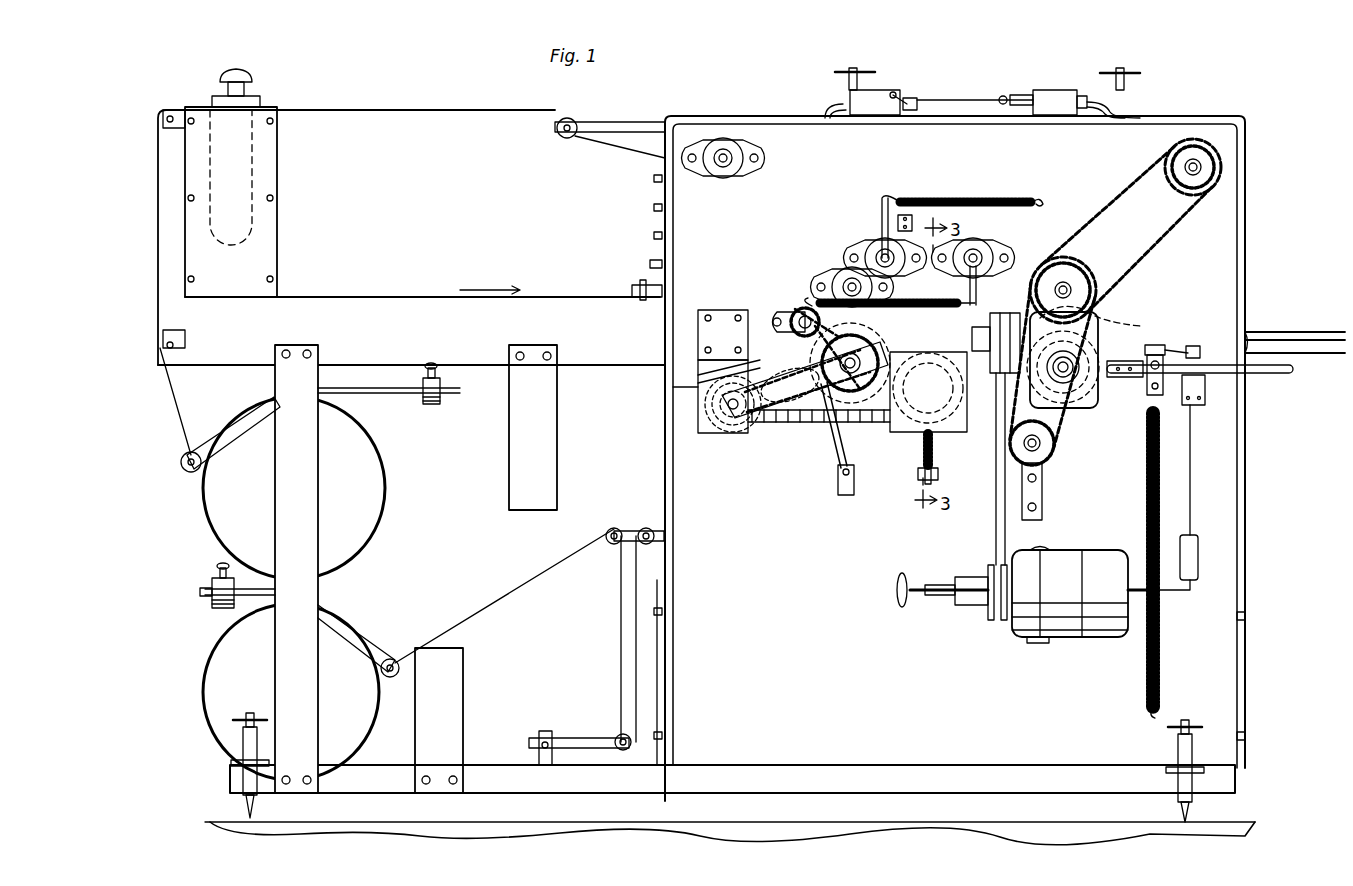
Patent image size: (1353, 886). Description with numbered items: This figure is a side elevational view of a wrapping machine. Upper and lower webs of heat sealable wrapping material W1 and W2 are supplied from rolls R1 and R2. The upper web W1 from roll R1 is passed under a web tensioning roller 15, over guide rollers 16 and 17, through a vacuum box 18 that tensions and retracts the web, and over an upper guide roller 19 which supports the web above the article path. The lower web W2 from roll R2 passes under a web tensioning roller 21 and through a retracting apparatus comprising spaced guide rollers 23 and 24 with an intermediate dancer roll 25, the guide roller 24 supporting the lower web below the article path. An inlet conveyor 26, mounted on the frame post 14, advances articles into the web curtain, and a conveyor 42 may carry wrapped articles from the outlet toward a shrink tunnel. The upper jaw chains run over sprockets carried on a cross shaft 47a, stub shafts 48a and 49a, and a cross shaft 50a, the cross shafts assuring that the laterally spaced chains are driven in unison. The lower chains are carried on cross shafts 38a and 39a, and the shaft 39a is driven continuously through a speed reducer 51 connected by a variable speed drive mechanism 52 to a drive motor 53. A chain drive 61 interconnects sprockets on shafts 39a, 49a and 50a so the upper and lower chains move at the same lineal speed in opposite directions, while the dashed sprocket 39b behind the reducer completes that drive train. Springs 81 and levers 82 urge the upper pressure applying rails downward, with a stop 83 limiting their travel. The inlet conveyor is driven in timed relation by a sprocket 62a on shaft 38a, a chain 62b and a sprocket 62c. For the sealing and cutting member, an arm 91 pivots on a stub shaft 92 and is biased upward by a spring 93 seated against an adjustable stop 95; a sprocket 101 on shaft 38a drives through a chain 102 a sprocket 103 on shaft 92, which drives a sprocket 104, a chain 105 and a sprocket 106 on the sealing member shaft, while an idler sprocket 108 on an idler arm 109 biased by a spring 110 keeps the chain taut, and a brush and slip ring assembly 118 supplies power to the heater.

The upright post 14 is at (305, 470).
The web tensioning roller 15 is at (186, 472).
The guide roller 16 is at (158, 352).
The guide roller 17 is at (165, 112).
The vacuum box 18 is at (278, 165).
The upper guide roller 19 is at (568, 118).
The web tensioning roller 21 is at (400, 655).
The guide roller 23 is at (607, 545).
The guide roller 24 is at (652, 545).
The dancer roll 25 is at (620, 738).
The inlet conveyor 26 is at (366, 296).
The upper web W1 is at (632, 158).
The lower web W2 is at (662, 522).
The roll R1 is at (380, 493).
The roll R2 is at (212, 670).
The cross shaft 47a is at (725, 177).
The stub shaft 48a is at (838, 282).
The spring 81 is at (991, 200).
The lever 82 is at (880, 225).
The stop 83 is at (906, 214).
The cross shaft 50a is at (1205, 167).
The chain drive 61 is at (1187, 243).
The stub shaft 49a is at (1066, 282).
The chain drive 39b is at (1145, 325).
The cross shaft 39a is at (1065, 375).
The conveyor 42 is at (1310, 319).
The speed reducer 51 is at (1094, 400).
The variable speed drive mechanism 52 is at (1000, 372).
The drive motor 53 is at (1072, 560).
The sprocket 62a is at (875, 345).
The chain 62b is at (835, 330).
The sprocket 62c is at (795, 312).
The arm 91 is at (861, 445).
The stub shaft 92 is at (735, 410).
The spring 93 is at (936, 446).
The adjustable stop 95 is at (922, 476).
The sprocket 101 is at (928, 392).
The chain 102 is at (775, 364).
The sprocket 103 is at (700, 432).
The sprocket 104 is at (713, 434).
The chain 105 is at (820, 420).
The sprocket 106 is at (920, 406).
The idler sprocket 108 is at (762, 345).
The idler arm 109 is at (755, 402).
The spring 110 is at (838, 430).
The brush and slip ring assembly 118 is at (962, 425).
The cross shaft 38a is at (817, 386).